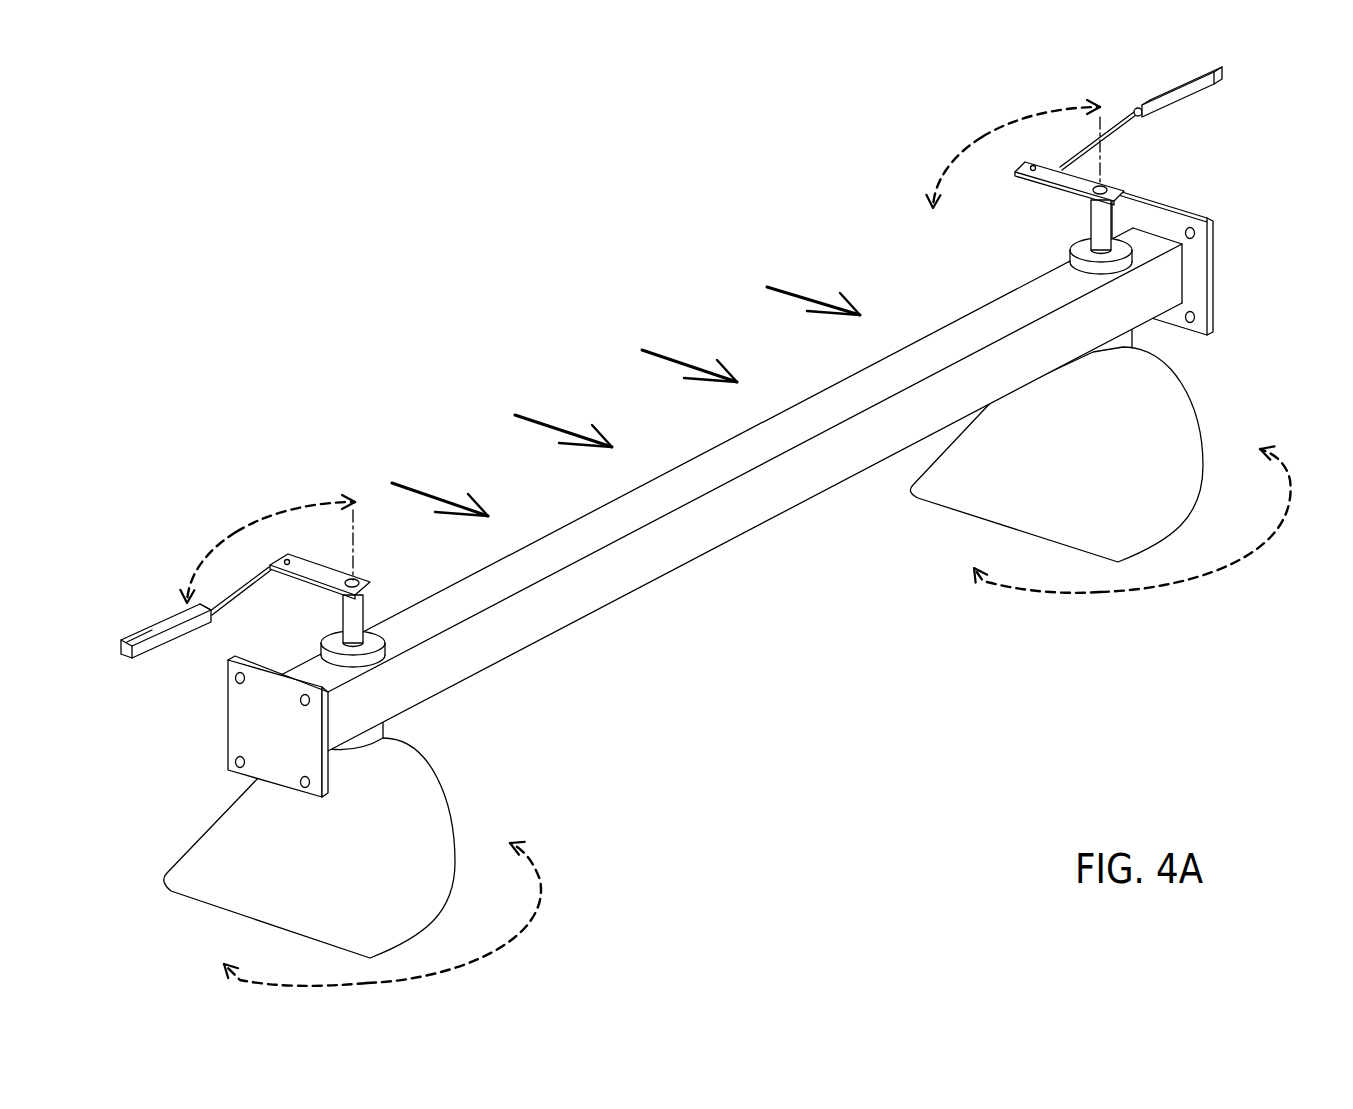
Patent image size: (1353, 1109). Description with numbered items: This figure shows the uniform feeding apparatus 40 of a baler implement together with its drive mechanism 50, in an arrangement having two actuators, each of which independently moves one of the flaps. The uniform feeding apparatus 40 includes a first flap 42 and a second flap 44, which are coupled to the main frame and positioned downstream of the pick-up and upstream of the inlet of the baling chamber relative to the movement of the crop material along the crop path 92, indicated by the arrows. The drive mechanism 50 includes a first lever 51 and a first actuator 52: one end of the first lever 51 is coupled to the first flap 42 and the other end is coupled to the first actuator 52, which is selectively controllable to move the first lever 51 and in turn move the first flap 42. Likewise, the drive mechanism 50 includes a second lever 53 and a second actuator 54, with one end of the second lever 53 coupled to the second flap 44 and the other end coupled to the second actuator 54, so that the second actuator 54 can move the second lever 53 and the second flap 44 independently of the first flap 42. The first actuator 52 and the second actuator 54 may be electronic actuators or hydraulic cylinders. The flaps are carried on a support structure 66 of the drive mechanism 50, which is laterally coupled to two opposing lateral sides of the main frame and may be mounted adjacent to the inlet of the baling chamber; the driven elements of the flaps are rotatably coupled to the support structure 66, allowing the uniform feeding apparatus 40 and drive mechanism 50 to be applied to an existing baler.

The uniform feeding apparatus 40 is at (702, 526).
The first flap 42 is at (474, 816).
The second flap 44 is at (919, 522).
The drive mechanism 50 is at (702, 399).
The first lever 51 is at (318, 571).
The first actuator 52 is at (143, 648).
The second lever 53 is at (1065, 178).
The second actuator 54 is at (1165, 109).
The support structure 66 is at (748, 513).
The crop path 92 is at (662, 355).